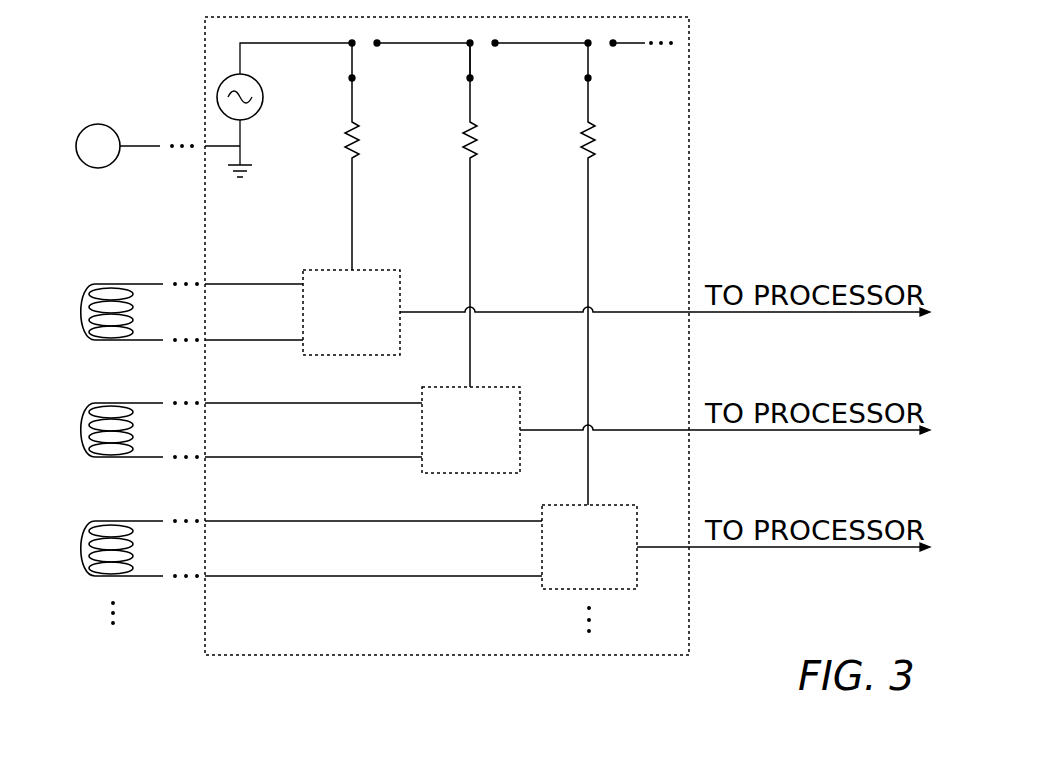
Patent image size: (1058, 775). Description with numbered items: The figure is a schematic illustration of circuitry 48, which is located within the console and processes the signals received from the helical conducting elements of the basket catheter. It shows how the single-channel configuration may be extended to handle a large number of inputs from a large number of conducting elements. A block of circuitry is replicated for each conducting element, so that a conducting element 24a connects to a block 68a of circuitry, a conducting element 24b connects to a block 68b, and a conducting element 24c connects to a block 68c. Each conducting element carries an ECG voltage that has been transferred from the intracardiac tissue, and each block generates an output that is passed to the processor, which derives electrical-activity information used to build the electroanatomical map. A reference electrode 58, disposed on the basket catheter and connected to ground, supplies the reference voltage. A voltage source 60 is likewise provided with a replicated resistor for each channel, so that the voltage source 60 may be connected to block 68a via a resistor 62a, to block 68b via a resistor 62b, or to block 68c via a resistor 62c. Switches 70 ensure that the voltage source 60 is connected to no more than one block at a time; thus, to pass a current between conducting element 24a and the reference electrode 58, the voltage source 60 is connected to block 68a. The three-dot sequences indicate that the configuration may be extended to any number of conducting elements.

The circuitry 48 is at (690, 183).
The voltage source 60 is at (226, 80).
The reference electrode 58 is at (101, 168).
The resistor 62a is at (343, 133).
The resistor 62b is at (461, 133).
The resistor 62c is at (579, 133).
The switches 70 is at (468, 58).
The conducting element 24a is at (83, 318).
The conducting element 24b is at (83, 418).
The conducting element 24c is at (83, 540).
The block of circuitry 68a is at (567, 312).
The block of circuitry 68b is at (567, 430).
The block of circuitry 68c is at (567, 547).